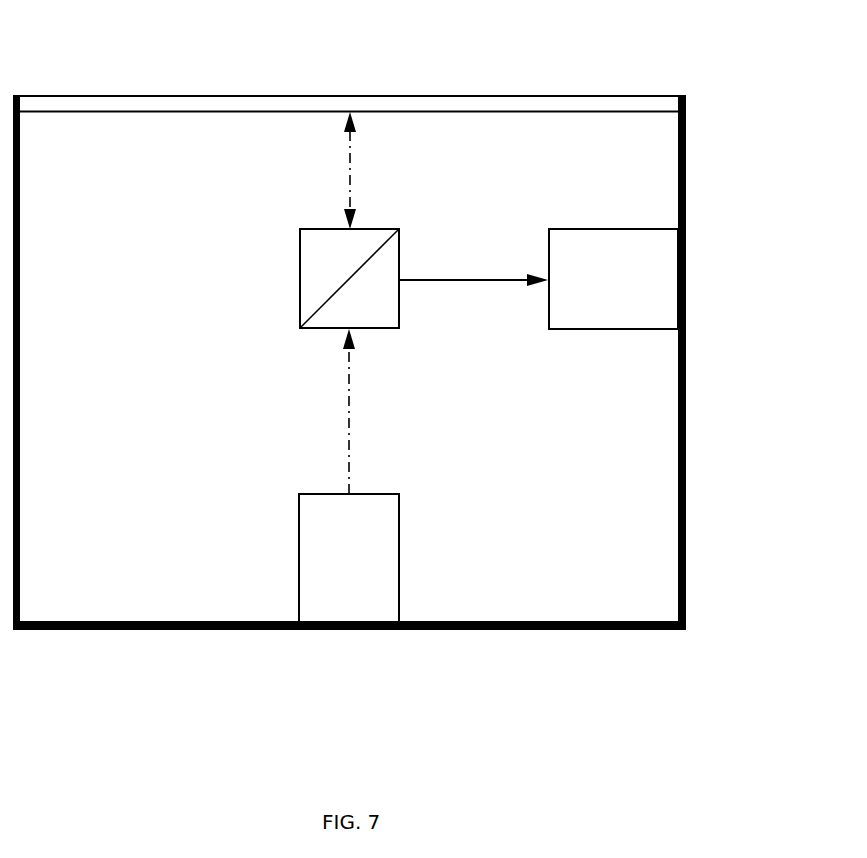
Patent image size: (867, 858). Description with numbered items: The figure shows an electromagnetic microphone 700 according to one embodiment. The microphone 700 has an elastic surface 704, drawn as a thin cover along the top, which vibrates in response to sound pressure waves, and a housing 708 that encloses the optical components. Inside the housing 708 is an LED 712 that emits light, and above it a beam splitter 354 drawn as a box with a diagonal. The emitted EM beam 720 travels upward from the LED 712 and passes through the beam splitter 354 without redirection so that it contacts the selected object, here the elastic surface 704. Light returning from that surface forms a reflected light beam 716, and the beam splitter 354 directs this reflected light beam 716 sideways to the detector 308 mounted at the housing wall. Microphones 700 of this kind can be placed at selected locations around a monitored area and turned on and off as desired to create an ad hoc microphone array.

The microphone 700 is at (508, 54).
The elastic surface 704 is at (350, 96).
The housing 708 is at (685, 275).
The LED 712 is at (399, 558).
The reflected light beam 716 is at (460, 278).
The emitted EM beam 720 is at (349, 462).
The beam splitter 354 is at (400, 276).
The detector 308 is at (615, 228).